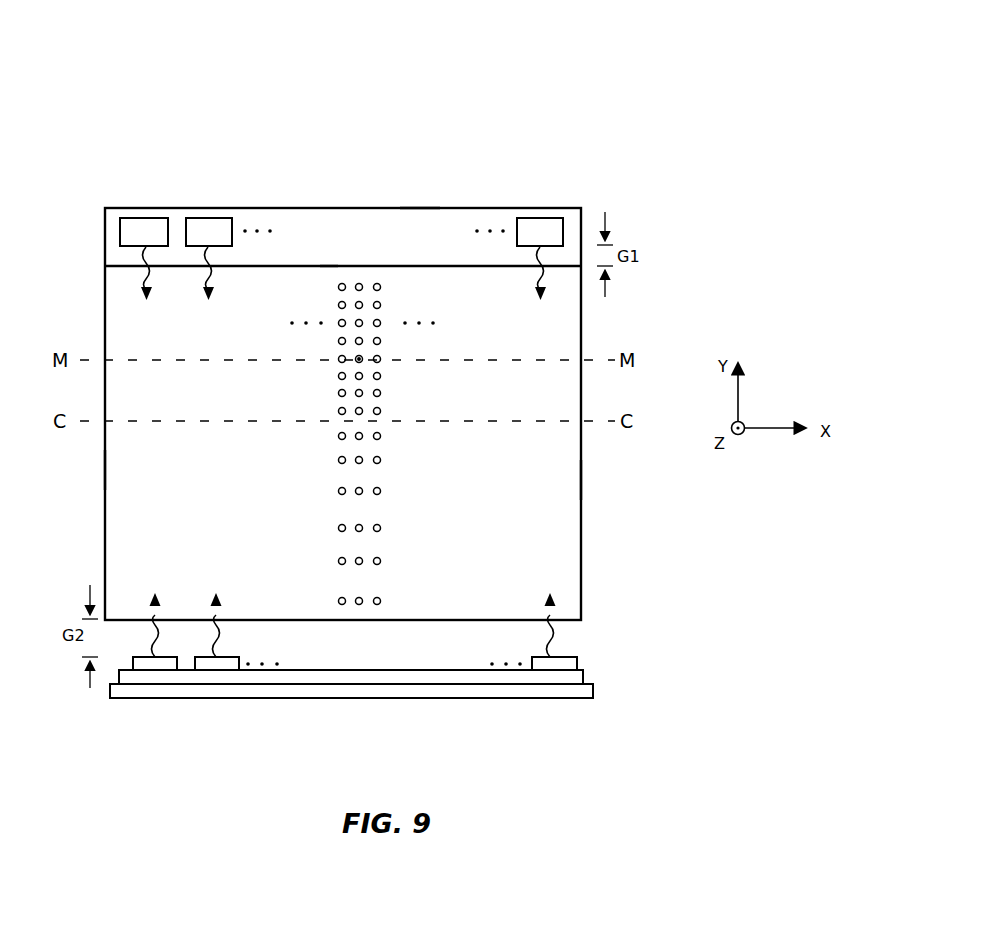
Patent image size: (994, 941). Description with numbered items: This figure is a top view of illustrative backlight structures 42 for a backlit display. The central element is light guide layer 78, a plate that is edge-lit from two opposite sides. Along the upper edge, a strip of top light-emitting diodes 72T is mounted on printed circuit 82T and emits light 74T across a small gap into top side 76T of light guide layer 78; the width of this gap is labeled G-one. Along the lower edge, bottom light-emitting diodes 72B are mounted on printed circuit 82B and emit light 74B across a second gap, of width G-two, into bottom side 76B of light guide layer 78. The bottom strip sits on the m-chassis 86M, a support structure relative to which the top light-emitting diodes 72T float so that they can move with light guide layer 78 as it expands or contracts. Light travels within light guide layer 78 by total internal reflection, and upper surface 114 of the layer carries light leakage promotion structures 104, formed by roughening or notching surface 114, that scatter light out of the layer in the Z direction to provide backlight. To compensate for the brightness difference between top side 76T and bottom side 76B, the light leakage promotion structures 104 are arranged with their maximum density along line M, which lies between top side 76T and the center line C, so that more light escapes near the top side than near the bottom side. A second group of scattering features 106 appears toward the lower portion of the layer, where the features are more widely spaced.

The backlight structures 42 is at (548, 66).
The top light-emitting diodes 72T is at (146, 218).
The light from top light-emitting diodes 74T is at (141, 282).
The top side of light guide layer 76T is at (328, 266).
The printed circuit 82T is at (414, 226).
The light leakage promotion structures 104 is at (381, 394).
The lower array elements 106 is at (381, 528).
The upper surface of light guide layer 114 is at (107, 471).
The light guide layer 78 is at (582, 483).
The bottom light-emitting diodes 72B is at (155, 664).
The light from bottom light-emitting diodes 74B is at (149, 612).
The bottom side of light guide layer 76B is at (438, 621).
The printed circuit 82B is at (512, 677).
The m-chassis 86M is at (325, 692).